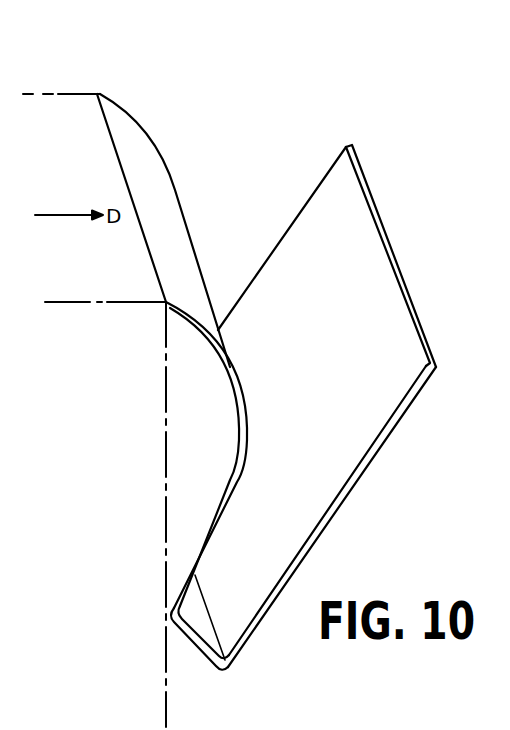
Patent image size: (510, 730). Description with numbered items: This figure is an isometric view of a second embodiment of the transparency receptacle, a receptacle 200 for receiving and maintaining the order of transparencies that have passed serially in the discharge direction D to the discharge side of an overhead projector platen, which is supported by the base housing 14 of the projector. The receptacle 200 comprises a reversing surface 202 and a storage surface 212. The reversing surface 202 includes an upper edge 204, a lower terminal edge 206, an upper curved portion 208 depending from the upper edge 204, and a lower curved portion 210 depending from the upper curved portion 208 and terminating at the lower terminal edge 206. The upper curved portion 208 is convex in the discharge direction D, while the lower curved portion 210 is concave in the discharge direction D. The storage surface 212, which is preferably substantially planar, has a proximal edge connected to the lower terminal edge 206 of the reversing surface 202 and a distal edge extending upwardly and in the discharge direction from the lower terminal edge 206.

The base housing 14 is at (71, 115).
The receptacle 200 is at (393, 203).
The reversing surface 202 is at (220, 505).
The upper edge 204 is at (145, 240).
The lower terminal edge 206 is at (228, 673).
The upper curved portion 208 is at (219, 371).
The lower curved portion 210 is at (190, 627).
The storage surface 212 is at (402, 420).